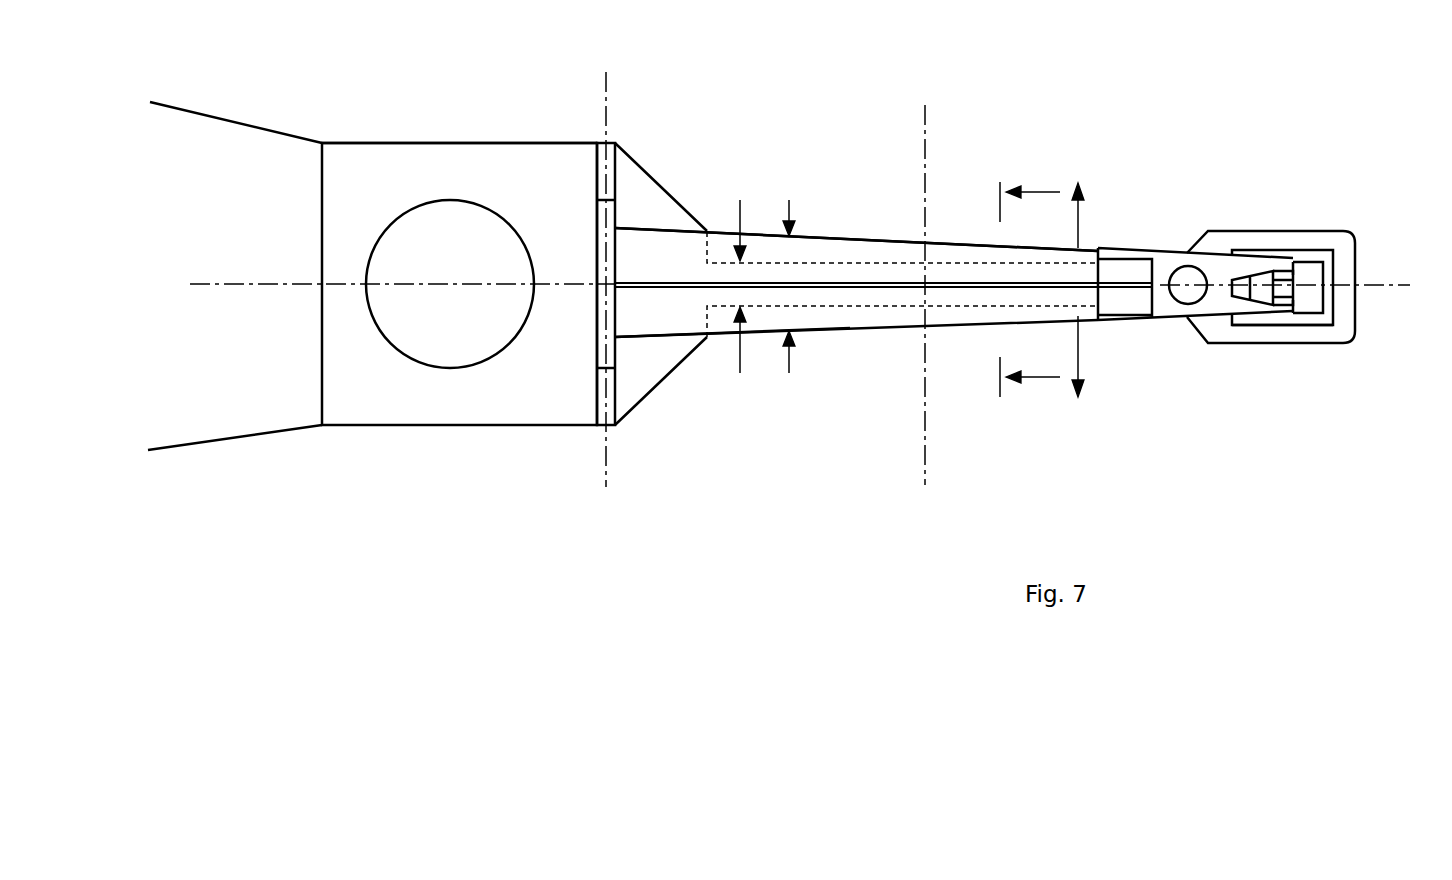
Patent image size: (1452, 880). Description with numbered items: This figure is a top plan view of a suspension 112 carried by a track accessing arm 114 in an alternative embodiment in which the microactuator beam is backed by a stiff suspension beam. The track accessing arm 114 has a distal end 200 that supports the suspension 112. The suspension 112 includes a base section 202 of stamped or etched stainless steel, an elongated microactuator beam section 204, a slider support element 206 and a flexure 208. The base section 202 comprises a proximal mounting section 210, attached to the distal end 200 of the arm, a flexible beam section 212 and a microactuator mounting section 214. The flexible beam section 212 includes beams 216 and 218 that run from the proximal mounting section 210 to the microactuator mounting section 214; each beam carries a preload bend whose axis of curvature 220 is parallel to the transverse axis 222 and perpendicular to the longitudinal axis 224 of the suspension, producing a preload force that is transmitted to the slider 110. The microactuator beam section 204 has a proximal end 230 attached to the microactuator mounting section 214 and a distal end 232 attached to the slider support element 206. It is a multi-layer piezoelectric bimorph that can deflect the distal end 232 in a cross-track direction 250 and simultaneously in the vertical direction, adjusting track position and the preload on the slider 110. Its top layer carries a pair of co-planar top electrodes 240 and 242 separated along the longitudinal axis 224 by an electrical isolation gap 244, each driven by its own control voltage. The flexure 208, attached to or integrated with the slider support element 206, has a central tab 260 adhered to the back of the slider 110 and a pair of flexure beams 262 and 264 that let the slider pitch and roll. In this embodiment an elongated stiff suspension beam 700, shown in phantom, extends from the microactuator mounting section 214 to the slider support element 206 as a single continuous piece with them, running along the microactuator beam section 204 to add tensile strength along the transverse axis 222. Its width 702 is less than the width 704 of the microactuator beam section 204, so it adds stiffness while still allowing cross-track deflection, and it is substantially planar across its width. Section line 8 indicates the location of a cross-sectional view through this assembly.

The track accessing arm 114 is at (229, 118).
The distal end 200 is at (233, 176).
The base section 202 is at (520, 140).
The proximal mounting section 210 is at (403, 140).
The flexible beam section 212 is at (616, 139).
The beam 216 is at (598, 168).
The beam 218 is at (602, 392).
The axis of curvature 220 is at (606, 83).
The microactuator mounting section 214 is at (654, 177).
The suspension 112 is at (762, 160).
The microactuator beam section 204 is at (963, 246).
The proximal end 230 is at (617, 307).
The electrical isolation gap 244 is at (865, 282).
The top electrode 240 is at (836, 260).
The top electrode 242 is at (865, 317).
The width 702 is at (738, 221).
The width 704 is at (789, 212).
The suspension beam 700 is at (828, 307).
The transverse axis 222 is at (925, 112).
The section line 8- 8 is at (1030, 284).
The cross-track direction 250 is at (1078, 223).
The slider support element 206 is at (1143, 250).
The distal end 232 is at (1152, 297).
The flexure 208 is at (1212, 245).
The flexure beam 262 is at (1295, 242).
The flexure beam 264 is at (1265, 327).
The slider 110 is at (1308, 310).
The central tab 260 is at (1318, 292).
The longitudinal axis 224 is at (1397, 278).